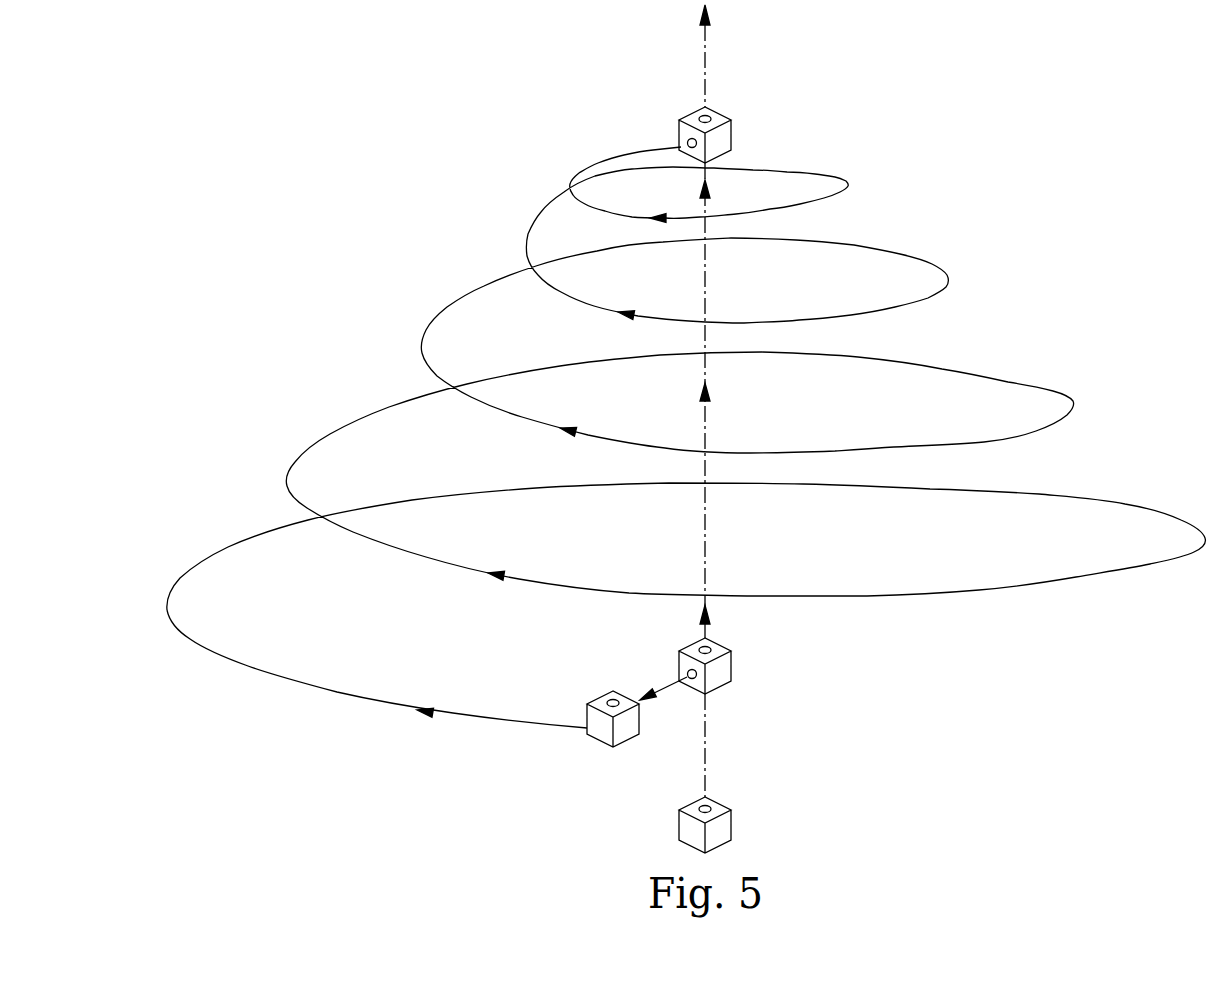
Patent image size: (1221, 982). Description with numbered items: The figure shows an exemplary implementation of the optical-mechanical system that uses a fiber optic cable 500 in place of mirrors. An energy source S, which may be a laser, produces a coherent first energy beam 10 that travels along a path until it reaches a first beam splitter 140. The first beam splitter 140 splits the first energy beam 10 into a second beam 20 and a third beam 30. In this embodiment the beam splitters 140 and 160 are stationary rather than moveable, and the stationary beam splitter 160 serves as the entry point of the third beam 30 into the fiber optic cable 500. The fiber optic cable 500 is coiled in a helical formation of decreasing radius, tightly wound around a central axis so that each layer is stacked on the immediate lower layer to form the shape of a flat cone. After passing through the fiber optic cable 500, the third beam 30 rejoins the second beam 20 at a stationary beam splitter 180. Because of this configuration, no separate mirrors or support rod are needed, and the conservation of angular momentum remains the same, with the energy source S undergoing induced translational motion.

The first energy beam 10 is at (707, 782).
The second beam 20 is at (703, 90).
The third beam 30 is at (298, 685).
The first beam splitter 140 is at (732, 670).
The beam splitter 160 is at (595, 698).
The beam splitter 180 is at (732, 132).
The fiber optic cable 500 is at (1117, 503).
The energy source S is at (652, 832).